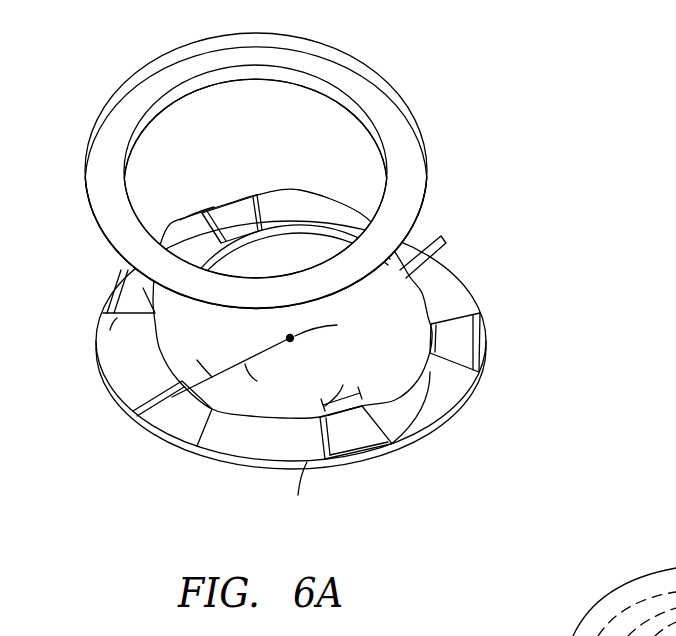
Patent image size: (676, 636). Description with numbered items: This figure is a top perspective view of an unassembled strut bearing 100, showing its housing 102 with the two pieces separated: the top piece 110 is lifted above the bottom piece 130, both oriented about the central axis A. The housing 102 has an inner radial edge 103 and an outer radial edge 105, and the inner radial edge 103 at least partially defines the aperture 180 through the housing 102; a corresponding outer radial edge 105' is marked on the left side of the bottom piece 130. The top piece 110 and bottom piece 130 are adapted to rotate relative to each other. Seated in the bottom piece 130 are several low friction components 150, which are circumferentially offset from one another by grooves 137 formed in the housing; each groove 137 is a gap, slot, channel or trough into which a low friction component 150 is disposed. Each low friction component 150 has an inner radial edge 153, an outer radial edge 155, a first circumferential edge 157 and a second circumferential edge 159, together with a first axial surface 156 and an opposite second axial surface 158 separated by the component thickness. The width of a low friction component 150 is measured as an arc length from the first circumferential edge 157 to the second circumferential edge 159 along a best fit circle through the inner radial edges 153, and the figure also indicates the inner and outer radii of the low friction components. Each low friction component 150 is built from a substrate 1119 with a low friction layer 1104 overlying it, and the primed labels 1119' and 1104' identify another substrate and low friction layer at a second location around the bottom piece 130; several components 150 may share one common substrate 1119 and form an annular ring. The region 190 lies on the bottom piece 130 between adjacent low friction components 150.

The strut bearing 100 is at (528, 65).
The top piece 110 is at (427, 150).
The housing 102 is at (326, 361).
The inner radial edge 103 is at (278, 420).
The outer radial edge 105 is at (365, 240).
The hook 105' is at (91, 284).
The low friction layer 1104 is at (249, 187).
The recess 1104' is at (92, 310).
The substrate 1119 is at (186, 187).
The inner edge 1119' is at (76, 343).
The bottom piece 130 is at (447, 426).
The groove 137 is at (200, 455).
The low friction component 150 is at (483, 353).
The inner radial edge 153 is at (432, 338).
The outer radial edge 155 is at (481, 334).
The first axial surface 156 is at (356, 432).
The first circumferential edge 157 is at (448, 316).
The second axial surface 158 is at (362, 457).
The second circumferential edge 159 is at (446, 364).
The aperture 180 is at (244, 366).
The face portion 190 is at (407, 408).